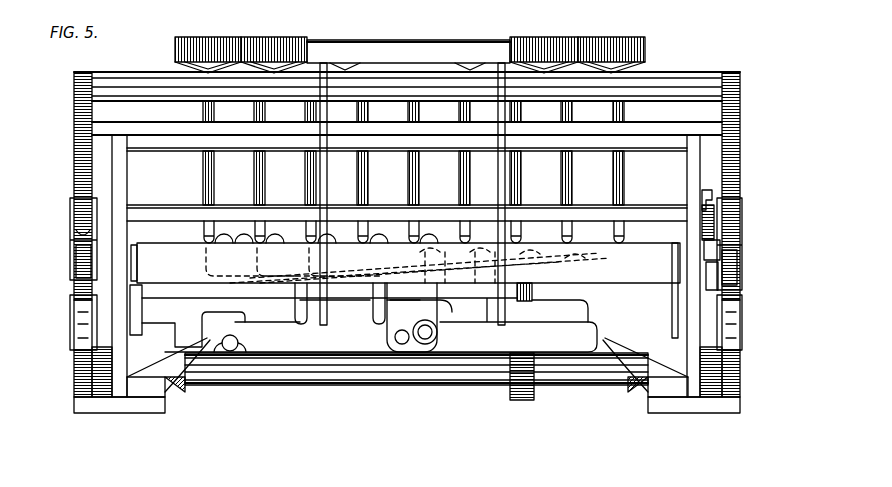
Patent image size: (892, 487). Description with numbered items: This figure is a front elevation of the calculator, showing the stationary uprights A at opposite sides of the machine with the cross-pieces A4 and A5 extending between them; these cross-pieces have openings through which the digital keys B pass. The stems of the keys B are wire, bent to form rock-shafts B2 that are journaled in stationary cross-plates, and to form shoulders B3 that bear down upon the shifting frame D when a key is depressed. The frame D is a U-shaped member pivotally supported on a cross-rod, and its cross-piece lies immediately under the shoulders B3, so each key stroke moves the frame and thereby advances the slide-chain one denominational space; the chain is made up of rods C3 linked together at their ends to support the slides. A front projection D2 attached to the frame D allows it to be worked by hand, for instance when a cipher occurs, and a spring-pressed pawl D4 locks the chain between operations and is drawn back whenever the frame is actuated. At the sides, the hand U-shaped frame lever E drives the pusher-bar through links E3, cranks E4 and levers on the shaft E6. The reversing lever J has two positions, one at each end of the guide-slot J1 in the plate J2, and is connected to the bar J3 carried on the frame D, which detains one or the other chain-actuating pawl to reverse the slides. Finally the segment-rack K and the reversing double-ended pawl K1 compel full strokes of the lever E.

The stationary uprights A is at (118, 172).
The cross-piece A4 is at (193, 136).
The cross-piece A5 is at (174, 212).
The digital keys B is at (251, 50).
The rock-shafts B2 is at (322, 326).
The shoulders B3 is at (213, 236).
The rods C3 is at (238, 344).
The shifting frame D is at (175, 278).
The front projection D2 is at (380, 60).
The spring-pressed pawl D4 is at (518, 366).
The hand U-shaped frame lever E is at (131, 74).
The links E3 is at (72, 242).
The cranks E4 is at (78, 320).
The shaft E6 is at (306, 386).
The reversing lever J is at (442, 337).
The guide-slot J1 is at (407, 340).
The plate J2 is at (390, 338).
The bar J3 is at (363, 317).
The segment-rack K is at (716, 232).
The reversing double-ended pawl K1 is at (710, 224).